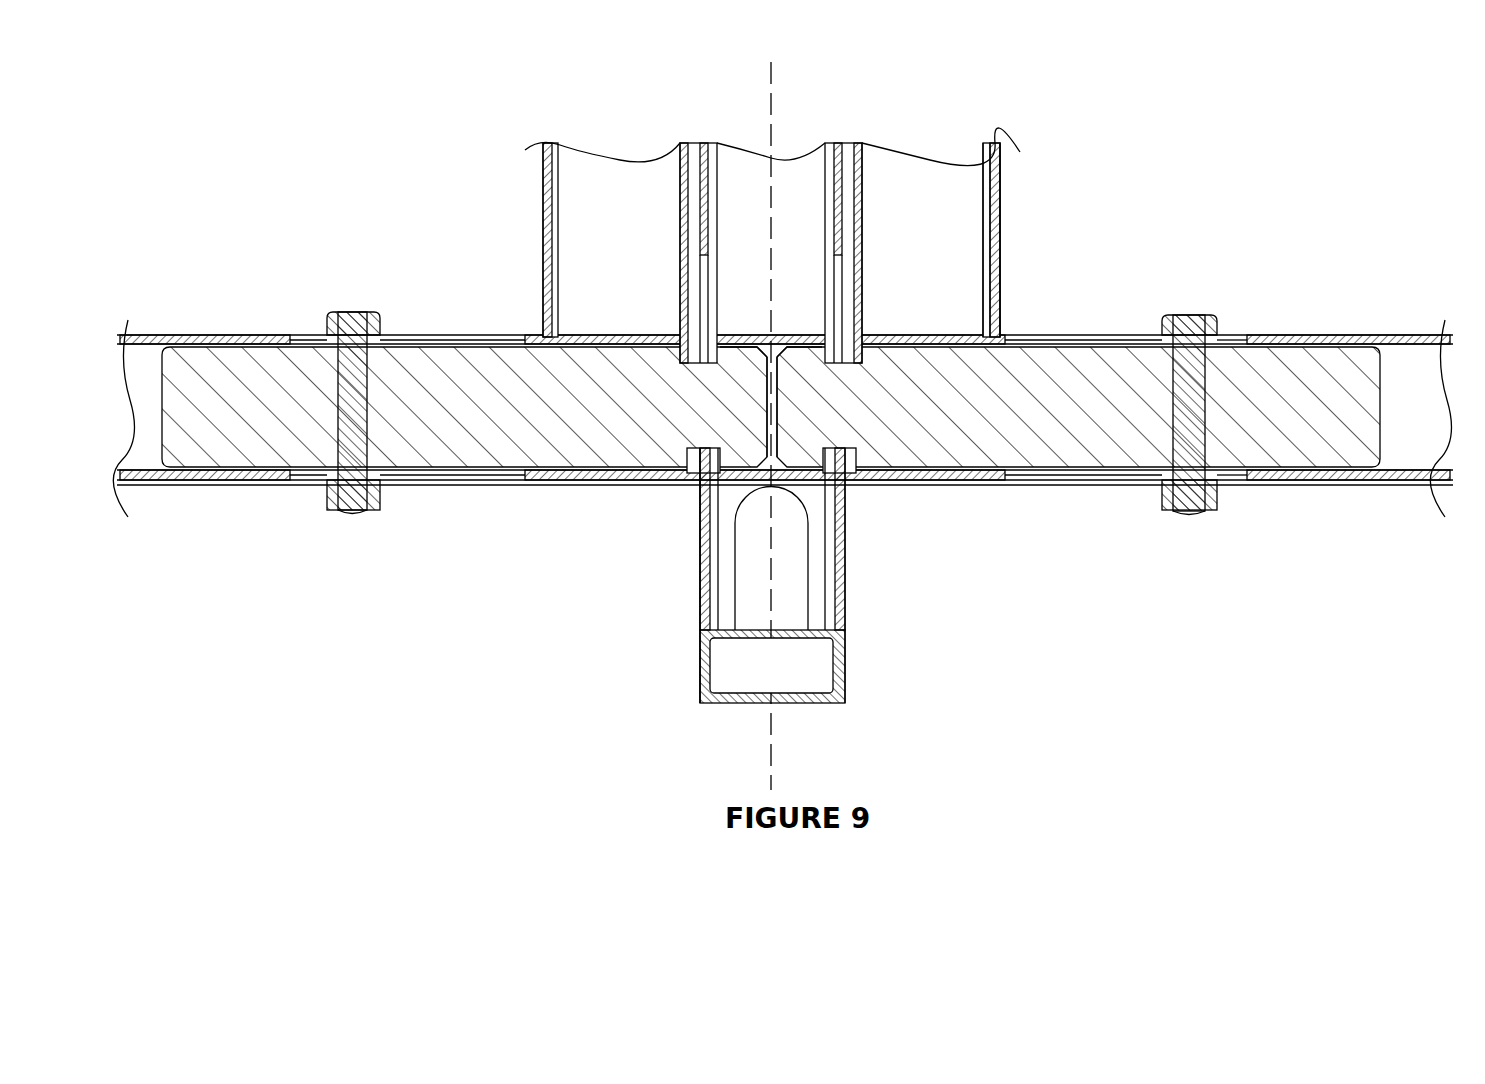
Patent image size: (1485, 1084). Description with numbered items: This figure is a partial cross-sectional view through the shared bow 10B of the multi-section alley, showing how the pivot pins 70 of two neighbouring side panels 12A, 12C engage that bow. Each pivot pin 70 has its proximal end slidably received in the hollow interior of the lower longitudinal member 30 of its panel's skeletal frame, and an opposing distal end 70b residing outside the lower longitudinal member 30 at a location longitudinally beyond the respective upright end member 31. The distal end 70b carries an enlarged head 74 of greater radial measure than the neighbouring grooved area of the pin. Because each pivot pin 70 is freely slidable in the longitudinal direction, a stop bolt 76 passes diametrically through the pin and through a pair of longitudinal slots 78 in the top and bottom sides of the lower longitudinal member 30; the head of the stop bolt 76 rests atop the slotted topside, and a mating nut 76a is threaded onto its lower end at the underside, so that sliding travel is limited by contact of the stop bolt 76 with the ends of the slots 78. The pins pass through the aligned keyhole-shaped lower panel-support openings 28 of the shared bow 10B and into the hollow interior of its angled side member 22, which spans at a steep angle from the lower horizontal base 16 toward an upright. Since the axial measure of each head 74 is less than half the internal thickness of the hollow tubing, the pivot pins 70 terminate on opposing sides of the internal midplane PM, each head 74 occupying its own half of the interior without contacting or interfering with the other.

The internal midplane PM is at (778, 80).
The pivot pin 70 is at (517, 430).
The lower longitudinal member 30 is at (220, 334).
The longitudinal slot 78 is at (462, 338).
The side panel 12A is at (527, 293).
The side panel 12C is at (1024, 295).
The upright end member 31 is at (998, 214).
The keyhole-shaped lower panel-support opening 28 is at (705, 277).
The enlarged head 74 is at (743, 334).
The distal end 70b is at (768, 382).
The stop bolt 76 is at (348, 318).
The mating nut 76a is at (335, 510).
The angled side member 22 is at (840, 557).
The lower horizontal base 16 is at (837, 670).
The shared bow 10B is at (684, 632).